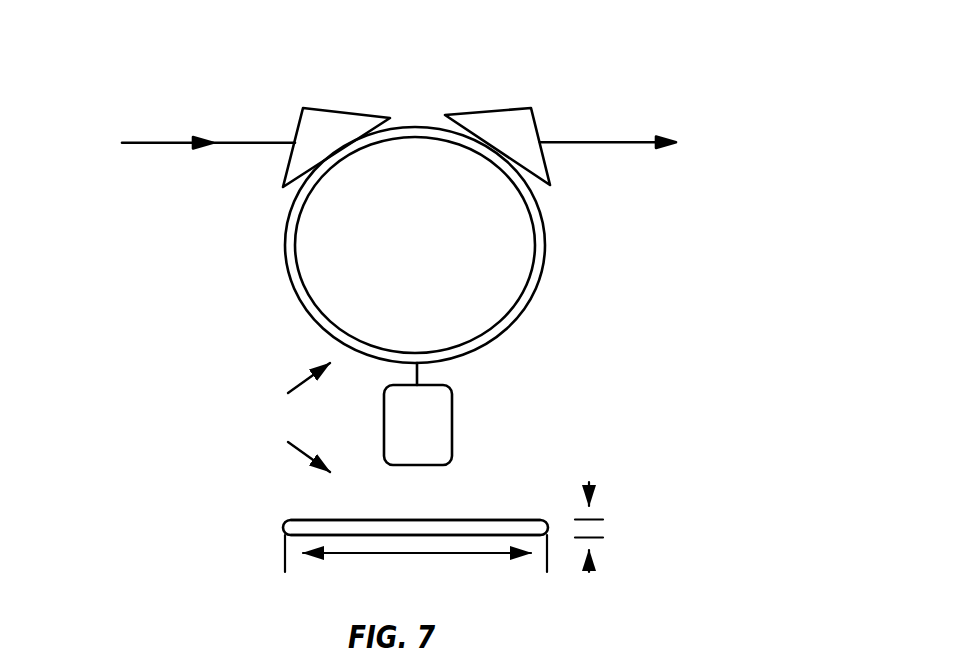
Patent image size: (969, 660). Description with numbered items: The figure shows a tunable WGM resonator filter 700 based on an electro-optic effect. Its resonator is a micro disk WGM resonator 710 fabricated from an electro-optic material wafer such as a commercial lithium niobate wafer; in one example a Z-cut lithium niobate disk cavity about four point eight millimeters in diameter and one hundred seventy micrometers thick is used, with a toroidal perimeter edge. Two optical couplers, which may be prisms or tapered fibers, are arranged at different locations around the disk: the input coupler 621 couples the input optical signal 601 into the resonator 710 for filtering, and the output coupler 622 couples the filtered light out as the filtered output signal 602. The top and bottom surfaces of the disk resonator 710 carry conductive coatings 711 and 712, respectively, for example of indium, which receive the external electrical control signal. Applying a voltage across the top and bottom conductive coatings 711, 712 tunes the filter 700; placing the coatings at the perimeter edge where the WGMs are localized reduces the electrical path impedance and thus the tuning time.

The tunable WGM resonator filter 700 is at (165, 70).
The input optical signal 601 is at (185, 143).
The filtered output signal 602 is at (578, 143).
The input coupler 621 is at (328, 105).
The output coupler 622 is at (495, 108).
The micro disk WGM resonator 710 is at (523, 249).
The top conductive coating 711 is at (323, 518).
The bottom conductive coating 712 is at (363, 537).